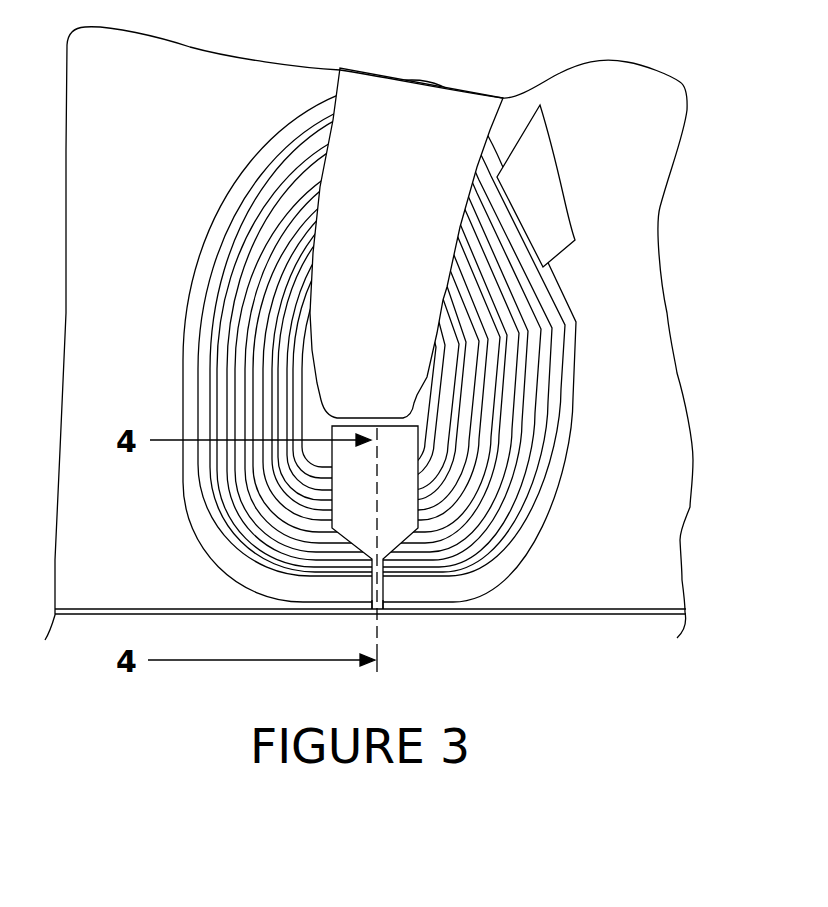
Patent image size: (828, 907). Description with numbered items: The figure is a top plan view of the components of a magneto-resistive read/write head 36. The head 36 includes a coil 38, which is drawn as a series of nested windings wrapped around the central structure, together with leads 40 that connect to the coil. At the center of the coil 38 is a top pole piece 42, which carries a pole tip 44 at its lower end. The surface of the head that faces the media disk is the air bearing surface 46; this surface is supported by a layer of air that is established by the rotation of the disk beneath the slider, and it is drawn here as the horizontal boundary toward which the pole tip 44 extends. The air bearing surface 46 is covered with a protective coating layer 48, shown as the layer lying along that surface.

The magneto-resistive head 36 is at (148, 235).
The coil 38 is at (557, 470).
The leads 40 is at (389, 176).
The top pole piece 42 is at (350, 460).
The pole tip 44 is at (383, 628).
The air bearing surface 46 is at (582, 636).
The protective coating layer 48 is at (485, 617).